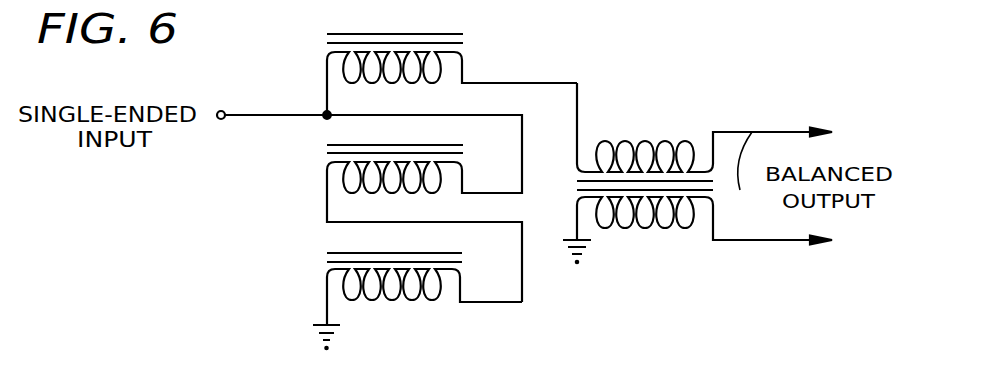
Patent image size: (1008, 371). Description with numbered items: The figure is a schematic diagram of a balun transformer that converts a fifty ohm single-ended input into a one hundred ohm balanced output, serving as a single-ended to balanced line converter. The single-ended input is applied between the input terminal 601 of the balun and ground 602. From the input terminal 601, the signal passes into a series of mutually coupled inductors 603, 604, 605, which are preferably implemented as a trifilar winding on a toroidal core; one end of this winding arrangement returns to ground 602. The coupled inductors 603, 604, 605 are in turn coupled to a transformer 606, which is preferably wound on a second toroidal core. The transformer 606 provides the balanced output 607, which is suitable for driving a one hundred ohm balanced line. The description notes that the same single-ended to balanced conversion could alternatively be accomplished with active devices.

The input terminal 601 is at (214, 121).
The ground 602 is at (317, 324).
The mutually coupled inductor 603 is at (462, 66).
The mutually coupled inductor 604 is at (327, 171).
The mutually coupled inductor 605 is at (327, 272).
The transformer 606 is at (643, 141).
The balanced output 607 is at (745, 240).